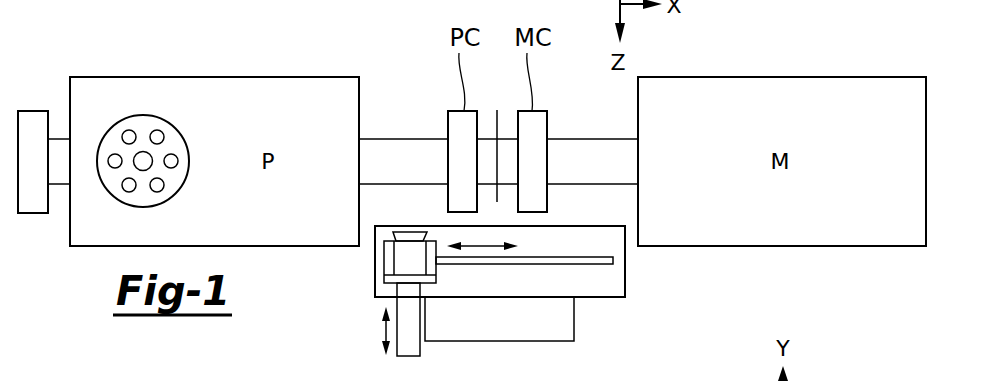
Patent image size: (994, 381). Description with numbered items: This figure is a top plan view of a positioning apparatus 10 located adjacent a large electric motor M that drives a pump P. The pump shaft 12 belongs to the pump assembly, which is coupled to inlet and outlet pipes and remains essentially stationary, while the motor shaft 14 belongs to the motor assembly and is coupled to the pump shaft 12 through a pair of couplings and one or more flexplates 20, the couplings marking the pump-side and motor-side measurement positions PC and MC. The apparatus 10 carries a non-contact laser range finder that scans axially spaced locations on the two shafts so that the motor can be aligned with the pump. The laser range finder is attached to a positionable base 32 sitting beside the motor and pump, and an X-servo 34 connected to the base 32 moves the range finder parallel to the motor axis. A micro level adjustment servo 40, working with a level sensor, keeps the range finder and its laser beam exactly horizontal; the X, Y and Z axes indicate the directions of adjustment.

The positioning apparatus 10 is at (648, 311).
The pump shaft 12 is at (405, 139).
The motor shaft 14 is at (582, 139).
The flexplate 20 is at (497, 110).
The positionable base 32 is at (375, 282).
The X-servo 34 is at (585, 267).
The micro level adjustment servo 40 is at (537, 341).